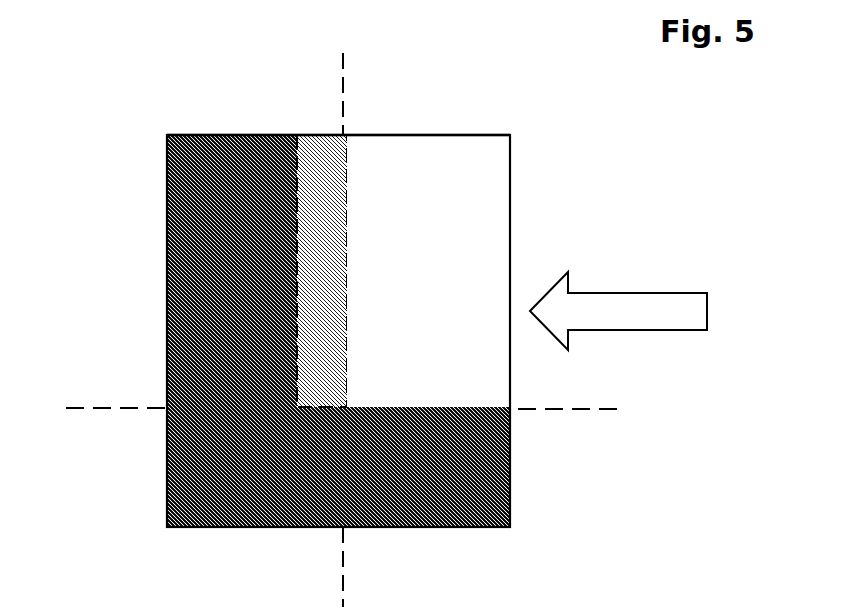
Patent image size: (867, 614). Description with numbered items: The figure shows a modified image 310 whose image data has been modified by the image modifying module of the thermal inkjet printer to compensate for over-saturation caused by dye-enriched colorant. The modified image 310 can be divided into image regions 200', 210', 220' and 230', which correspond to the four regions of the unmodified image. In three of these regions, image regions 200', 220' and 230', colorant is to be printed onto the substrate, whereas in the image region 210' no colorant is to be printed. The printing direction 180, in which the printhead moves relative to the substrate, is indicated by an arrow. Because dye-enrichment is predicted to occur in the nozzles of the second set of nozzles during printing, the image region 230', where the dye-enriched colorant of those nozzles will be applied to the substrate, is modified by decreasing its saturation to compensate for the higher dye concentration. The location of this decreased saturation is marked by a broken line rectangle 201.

The image region 200' is at (338, 367).
The image region 230' is at (232, 237).
The image region 220' is at (338, 503).
The broken line rectangle 201 is at (346, 155).
The image region 210' is at (474, 271).
The modified image 310 is at (443, 134).
The printing direction 180 is at (673, 310).